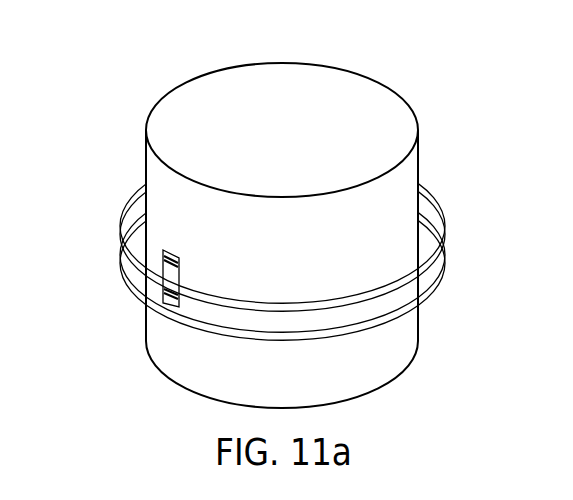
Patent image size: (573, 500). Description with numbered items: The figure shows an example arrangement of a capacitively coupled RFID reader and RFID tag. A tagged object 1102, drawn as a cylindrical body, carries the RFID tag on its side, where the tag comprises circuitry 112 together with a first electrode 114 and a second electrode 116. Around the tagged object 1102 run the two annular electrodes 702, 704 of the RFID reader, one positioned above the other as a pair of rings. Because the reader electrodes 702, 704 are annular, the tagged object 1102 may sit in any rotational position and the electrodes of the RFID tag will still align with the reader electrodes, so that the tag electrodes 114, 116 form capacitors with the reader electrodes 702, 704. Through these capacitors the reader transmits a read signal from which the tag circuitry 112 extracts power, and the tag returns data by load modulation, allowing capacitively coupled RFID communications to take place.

The tagged object 1102 is at (202, 97).
The electrode 702 is at (435, 193).
The electrode 704 is at (437, 280).
The circuitry 112 is at (172, 272).
The first electrode 114 is at (163, 252).
The second electrode 116 is at (168, 298).